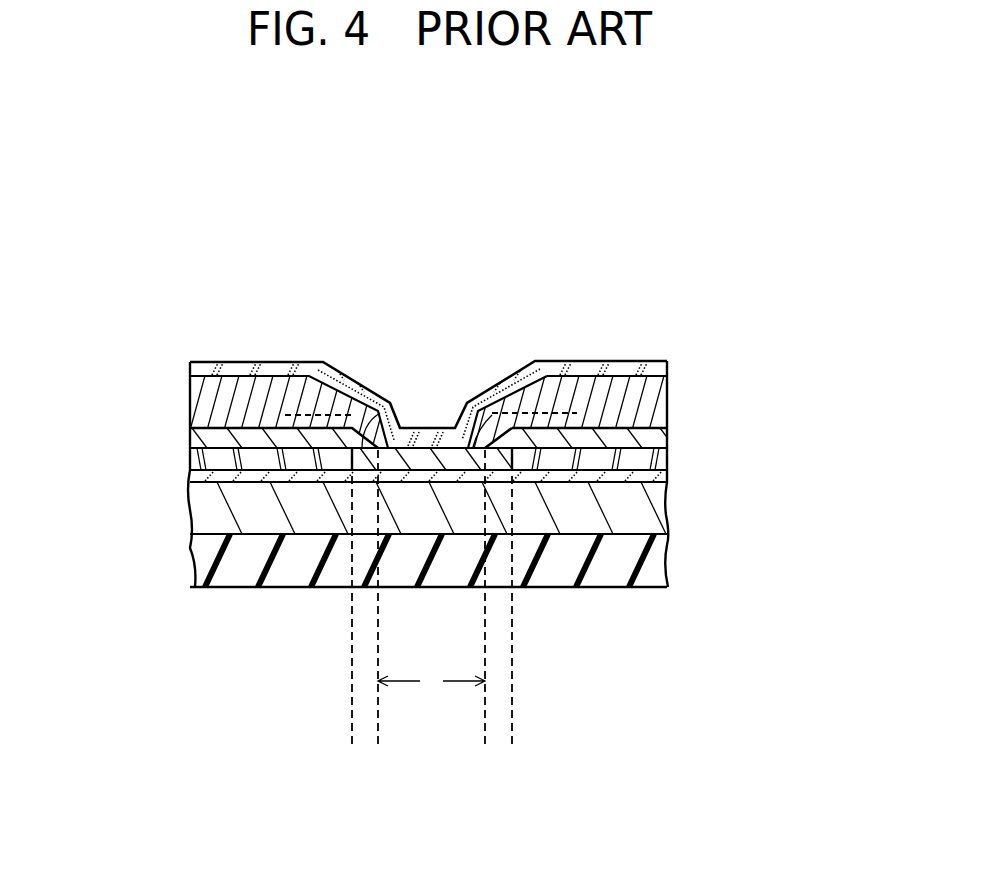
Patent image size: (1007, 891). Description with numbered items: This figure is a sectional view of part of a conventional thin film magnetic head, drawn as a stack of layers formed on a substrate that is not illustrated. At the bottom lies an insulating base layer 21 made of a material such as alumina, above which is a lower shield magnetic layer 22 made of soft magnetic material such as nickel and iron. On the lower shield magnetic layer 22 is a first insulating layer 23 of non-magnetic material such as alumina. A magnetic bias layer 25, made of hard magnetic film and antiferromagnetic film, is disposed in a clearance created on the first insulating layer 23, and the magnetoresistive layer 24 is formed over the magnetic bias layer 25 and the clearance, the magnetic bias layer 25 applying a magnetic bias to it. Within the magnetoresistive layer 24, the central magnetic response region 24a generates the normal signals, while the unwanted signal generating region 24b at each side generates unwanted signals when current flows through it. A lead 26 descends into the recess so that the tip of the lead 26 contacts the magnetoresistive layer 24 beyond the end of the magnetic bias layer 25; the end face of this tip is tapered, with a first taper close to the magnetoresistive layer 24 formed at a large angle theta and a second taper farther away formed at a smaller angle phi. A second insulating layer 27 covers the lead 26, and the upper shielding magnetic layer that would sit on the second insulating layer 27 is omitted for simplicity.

The insulating base layer 21 is at (230, 562).
The lower shield magnetic layer 22 is at (217, 507).
The first insulating layer 23 is at (623, 473).
The magnetoresistive layer 24 is at (643, 433).
The magnetic response region 24a is at (475, 725).
The unwanted signal generating region 24b is at (342, 686).
The magnetic bias layer 25 is at (217, 457).
The lead 26 is at (648, 413).
The second insulating layer 27 is at (647, 361).